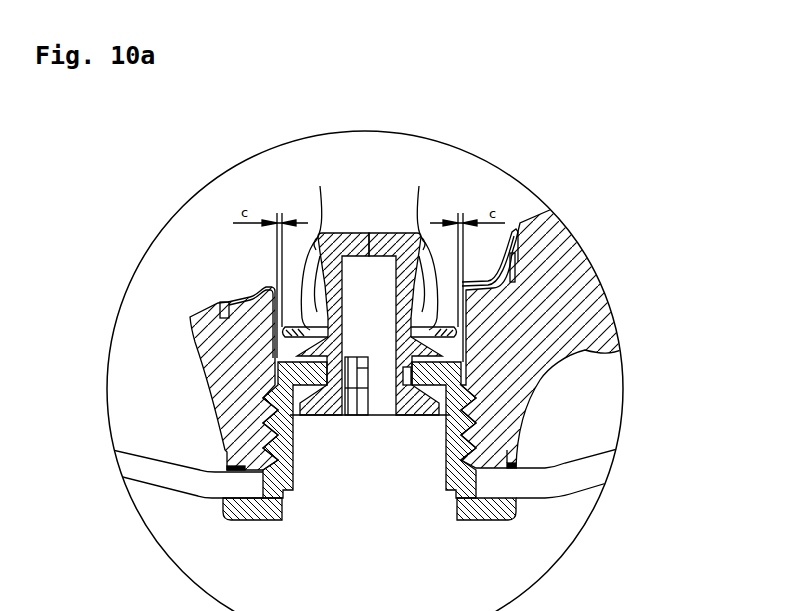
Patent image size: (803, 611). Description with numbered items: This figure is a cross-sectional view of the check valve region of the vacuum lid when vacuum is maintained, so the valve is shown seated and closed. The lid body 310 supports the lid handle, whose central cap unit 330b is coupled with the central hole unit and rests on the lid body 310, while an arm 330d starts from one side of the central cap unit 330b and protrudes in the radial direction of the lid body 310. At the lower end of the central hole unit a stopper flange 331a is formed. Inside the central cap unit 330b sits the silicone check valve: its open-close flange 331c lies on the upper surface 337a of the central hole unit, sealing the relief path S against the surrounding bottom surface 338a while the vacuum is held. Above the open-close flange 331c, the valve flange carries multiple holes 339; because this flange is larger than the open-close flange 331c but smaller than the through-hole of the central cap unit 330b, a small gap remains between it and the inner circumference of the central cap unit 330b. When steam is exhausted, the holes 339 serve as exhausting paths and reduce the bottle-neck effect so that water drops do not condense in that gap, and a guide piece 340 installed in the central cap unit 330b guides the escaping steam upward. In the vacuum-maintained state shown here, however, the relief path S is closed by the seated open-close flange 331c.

The holes 339 is at (370, 291).
The guide piece 340 is at (513, 228).
The arm 330d is at (555, 246).
The open-close flange 331c is at (278, 340).
The upper surface 337a is at (461, 364).
The central cap unit 330b is at (237, 386).
The bottom surface 338a is at (279, 392).
The relief path S is at (405, 372).
The lid body 310 is at (555, 482).
The stopper flange 331a is at (250, 519).